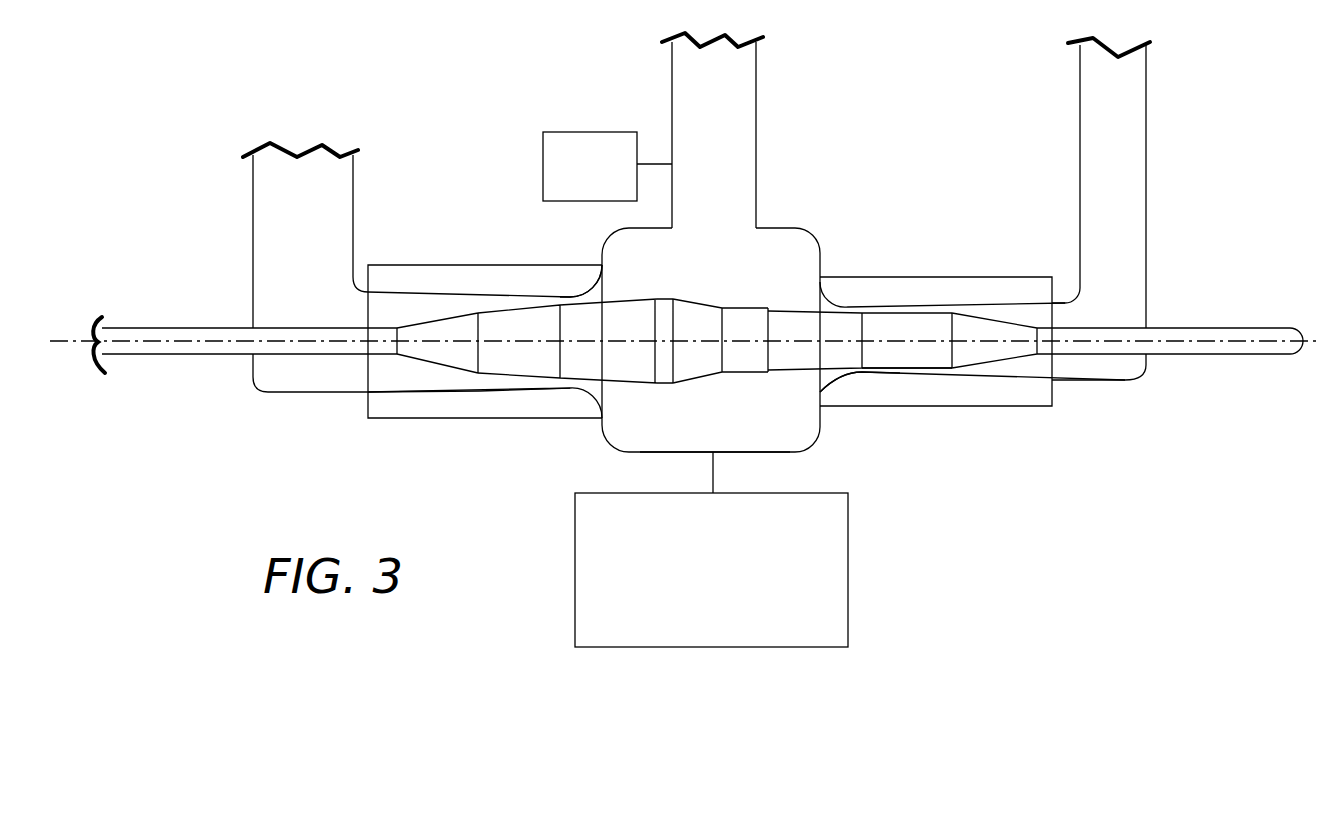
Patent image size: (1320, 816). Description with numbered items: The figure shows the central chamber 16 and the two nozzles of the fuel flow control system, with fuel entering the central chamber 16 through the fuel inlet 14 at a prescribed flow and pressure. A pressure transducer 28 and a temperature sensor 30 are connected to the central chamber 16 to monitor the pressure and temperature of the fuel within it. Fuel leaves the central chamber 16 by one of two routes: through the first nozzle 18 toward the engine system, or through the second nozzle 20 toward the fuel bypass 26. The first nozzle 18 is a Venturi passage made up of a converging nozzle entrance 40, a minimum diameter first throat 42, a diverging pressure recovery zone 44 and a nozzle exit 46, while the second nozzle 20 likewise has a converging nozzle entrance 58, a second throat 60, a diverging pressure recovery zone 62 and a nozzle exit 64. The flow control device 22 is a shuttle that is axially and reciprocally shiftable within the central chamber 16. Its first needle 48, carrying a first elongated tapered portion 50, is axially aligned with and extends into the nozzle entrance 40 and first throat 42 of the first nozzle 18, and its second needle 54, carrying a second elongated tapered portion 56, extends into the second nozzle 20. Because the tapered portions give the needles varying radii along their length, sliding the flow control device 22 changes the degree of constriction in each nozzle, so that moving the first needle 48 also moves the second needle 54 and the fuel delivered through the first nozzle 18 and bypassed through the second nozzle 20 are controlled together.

The fuel inlet 14 is at (708, 219).
The central chamber 16 is at (790, 450).
The first nozzle 18 is at (1044, 412).
The second nozzle 20 is at (401, 259).
The flow control device 22 is at (701, 383).
The fuel bypass 26 is at (333, 205).
The pressure transducer 28 is at (711, 570).
The temperature sensor 30 is at (607, 166).
The converging nozzle entrance 40 is at (820, 378).
The first throat 42 is at (862, 378).
The diverging pressure recovery zone 44 is at (1003, 368).
The nozzle exit 46 is at (1060, 313).
The first needle 48 is at (888, 367).
The first elongated tapered portion 50 is at (920, 374).
The second needle 54 is at (538, 362).
The second elongated tapered portion 56 is at (482, 378).
The converging nozzle entrance 58 is at (602, 292).
The second throat 60 is at (560, 390).
The diverging pressure recovery zone 62 is at (392, 377).
The nozzle exit 64 is at (362, 365).